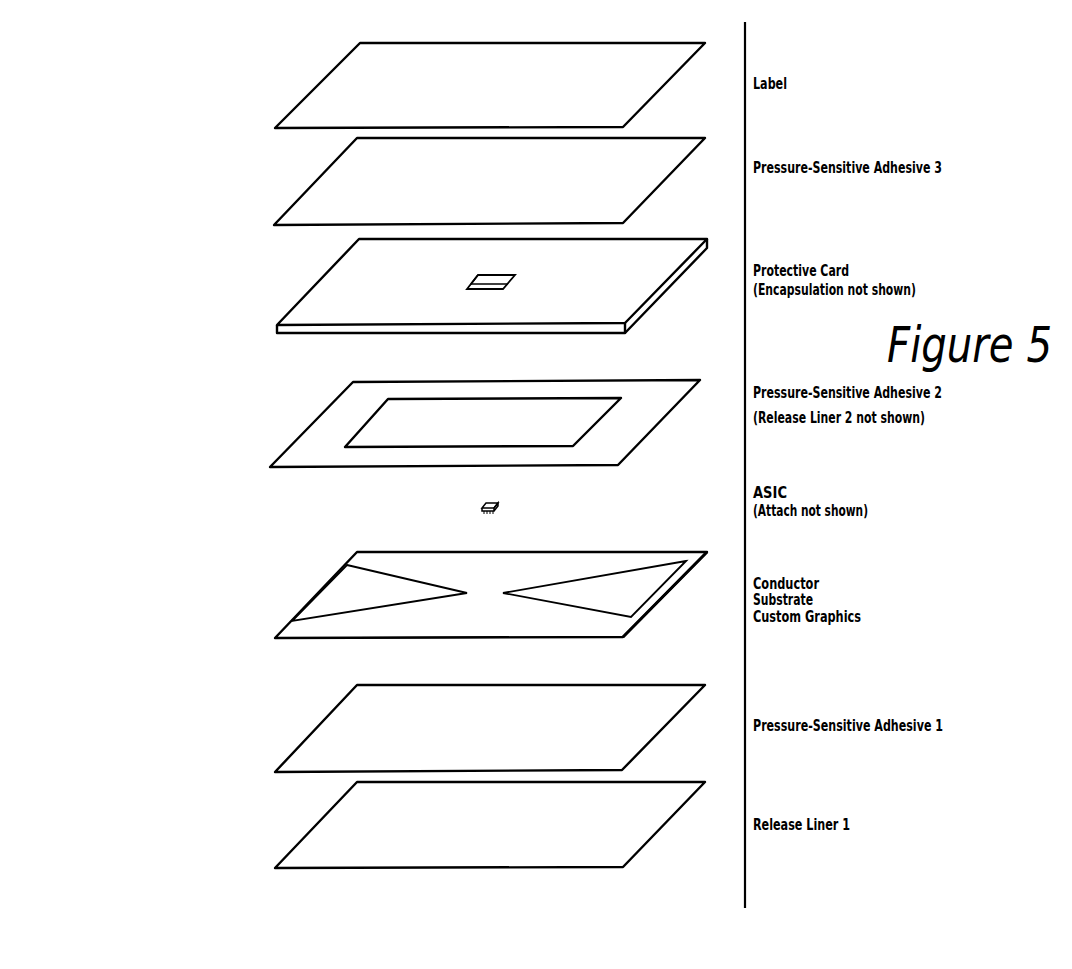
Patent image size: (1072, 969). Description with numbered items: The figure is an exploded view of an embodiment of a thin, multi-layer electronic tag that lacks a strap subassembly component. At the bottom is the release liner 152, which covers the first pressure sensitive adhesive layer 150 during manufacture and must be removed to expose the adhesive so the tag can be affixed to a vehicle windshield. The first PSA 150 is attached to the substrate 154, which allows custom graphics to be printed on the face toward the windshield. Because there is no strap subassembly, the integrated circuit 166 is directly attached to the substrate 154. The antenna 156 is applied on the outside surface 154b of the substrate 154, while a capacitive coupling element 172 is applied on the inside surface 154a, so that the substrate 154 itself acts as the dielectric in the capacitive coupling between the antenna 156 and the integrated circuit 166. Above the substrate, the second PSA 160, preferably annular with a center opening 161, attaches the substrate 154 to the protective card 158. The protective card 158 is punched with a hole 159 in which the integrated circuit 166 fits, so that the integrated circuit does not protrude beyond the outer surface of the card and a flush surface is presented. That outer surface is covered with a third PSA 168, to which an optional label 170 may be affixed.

The label 170 is at (295, 93).
The third PSA 168 is at (298, 190).
The protective card 158 is at (287, 298).
The hole 159 is at (473, 282).
The second PSA 160 is at (445, 423).
The center opening 161 is at (583, 415).
The integrated circuit 166 is at (477, 505).
The substrate 154 is at (460, 591).
The capacitive coupling element 172 is at (348, 590).
The inside surface 154a is at (672, 550).
The outside surface 154b is at (641, 629).
The antenna 156 is at (325, 647).
The first pressure sensitive adhesive layer 150 is at (275, 755).
The release liner 152 is at (277, 850).